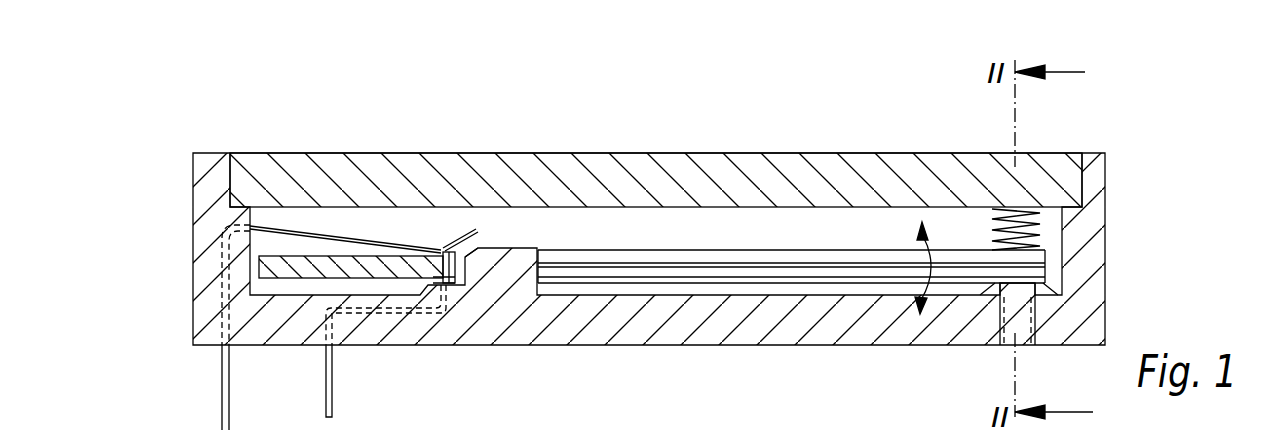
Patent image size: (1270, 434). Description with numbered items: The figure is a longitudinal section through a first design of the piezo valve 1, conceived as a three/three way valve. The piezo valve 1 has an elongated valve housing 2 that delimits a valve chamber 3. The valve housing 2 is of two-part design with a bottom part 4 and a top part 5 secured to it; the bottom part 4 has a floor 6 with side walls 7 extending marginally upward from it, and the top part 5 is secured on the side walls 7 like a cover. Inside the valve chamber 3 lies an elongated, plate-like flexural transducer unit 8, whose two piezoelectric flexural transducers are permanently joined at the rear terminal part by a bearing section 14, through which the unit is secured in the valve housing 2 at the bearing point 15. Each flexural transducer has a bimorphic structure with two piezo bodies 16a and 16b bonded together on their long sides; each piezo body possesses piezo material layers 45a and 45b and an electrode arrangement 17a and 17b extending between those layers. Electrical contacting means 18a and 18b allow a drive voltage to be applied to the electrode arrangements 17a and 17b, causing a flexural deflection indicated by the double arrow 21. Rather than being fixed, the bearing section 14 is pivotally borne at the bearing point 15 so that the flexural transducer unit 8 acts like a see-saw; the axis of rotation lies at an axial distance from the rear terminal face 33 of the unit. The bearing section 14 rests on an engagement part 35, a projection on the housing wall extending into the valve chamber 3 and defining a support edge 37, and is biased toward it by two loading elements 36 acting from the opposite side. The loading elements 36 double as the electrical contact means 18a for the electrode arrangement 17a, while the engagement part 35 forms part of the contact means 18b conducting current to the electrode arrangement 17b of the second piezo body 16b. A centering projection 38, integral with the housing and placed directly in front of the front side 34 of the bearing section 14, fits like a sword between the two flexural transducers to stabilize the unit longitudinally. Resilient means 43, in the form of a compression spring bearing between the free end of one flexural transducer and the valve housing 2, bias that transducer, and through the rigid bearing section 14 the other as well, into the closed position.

The piezo valve 1 is at (205, 114).
The valve housing 2 is at (680, 178).
The valve chamber 3 is at (572, 217).
The bottom part 4 is at (680, 330).
The top part 5 is at (858, 175).
The floor 6 is at (950, 322).
The side walls 7 is at (242, 280).
The flexural transducer unit 8 is at (699, 238).
The bearing section 14 is at (363, 258).
The bearing point 15 is at (474, 274).
The first piezo body 16a is at (893, 258).
The second piezo body 16b is at (869, 273).
The electrode arrangement of the first piezo body 17a is at (802, 263).
The electrode arrangement of the second piezo body 17b is at (769, 283).
The electrical contact means 18a is at (295, 232).
The electrical contact means 18b is at (375, 313).
The double arrow 21 is at (934, 247).
The rear terminal face 33 is at (248, 266).
The front side 34 is at (440, 252).
The engagement part 35 is at (447, 292).
The loading elements 36 is at (340, 240).
The support edge 37 is at (452, 262).
The centering projection 38 is at (520, 250).
The resilient means 43 is at (1032, 224).
The piezo material layers 45a is at (633, 262).
The piezo material layers 45b is at (608, 278).